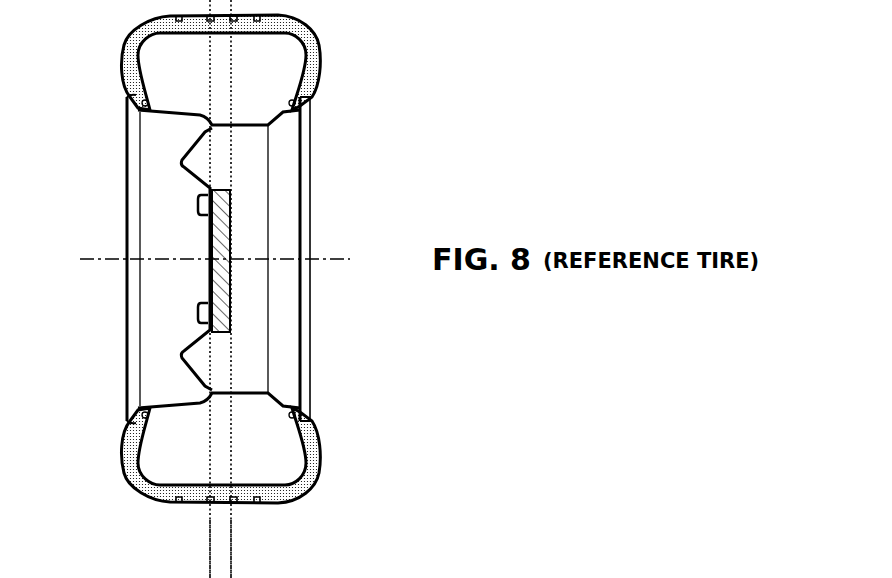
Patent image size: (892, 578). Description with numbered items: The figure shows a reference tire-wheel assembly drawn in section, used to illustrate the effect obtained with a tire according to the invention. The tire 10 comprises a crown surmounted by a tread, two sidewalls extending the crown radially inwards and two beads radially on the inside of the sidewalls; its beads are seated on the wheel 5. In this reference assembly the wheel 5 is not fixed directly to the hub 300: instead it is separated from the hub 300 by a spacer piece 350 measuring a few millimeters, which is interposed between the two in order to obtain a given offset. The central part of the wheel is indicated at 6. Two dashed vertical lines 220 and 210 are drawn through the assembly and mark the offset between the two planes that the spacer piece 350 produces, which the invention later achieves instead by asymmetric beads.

The tire 10 is at (352, 71).
The wheel 5 is at (350, 189).
The disc 6 is at (248, 398).
The hub 300 is at (230, 275).
The spacer piece 350 is at (207, 232).
The tire center axis 220 is at (210, 557).
The wheel center axis 210 is at (231, 555).